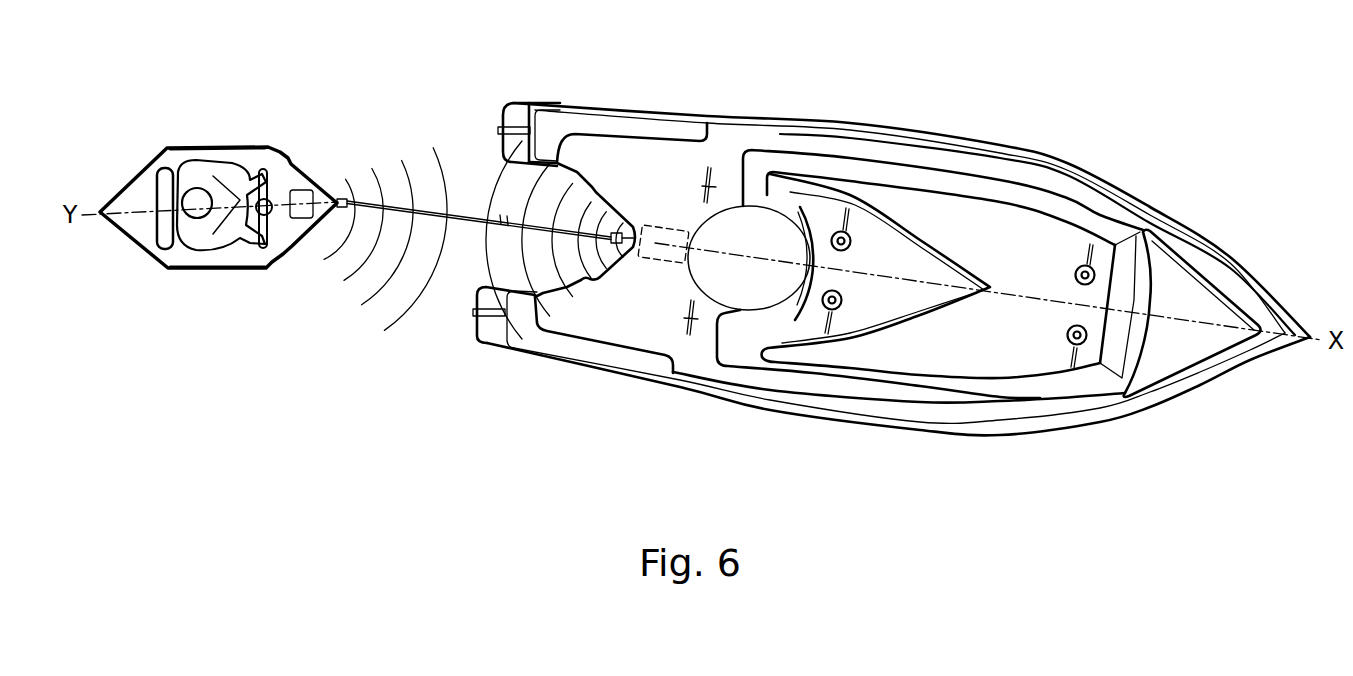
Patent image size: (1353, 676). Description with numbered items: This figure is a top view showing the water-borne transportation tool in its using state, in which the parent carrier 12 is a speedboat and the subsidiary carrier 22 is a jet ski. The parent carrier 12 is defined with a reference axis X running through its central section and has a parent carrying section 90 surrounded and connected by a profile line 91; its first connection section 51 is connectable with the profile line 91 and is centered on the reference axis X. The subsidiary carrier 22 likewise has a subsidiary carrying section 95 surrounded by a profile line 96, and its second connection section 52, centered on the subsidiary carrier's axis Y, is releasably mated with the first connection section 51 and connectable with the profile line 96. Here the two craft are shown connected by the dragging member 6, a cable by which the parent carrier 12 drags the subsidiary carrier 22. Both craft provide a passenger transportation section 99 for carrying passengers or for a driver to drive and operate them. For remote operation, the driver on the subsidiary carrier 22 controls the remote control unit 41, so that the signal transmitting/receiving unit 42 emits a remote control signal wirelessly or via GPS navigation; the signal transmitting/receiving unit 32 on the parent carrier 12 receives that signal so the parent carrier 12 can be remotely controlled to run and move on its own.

The dragging member 6 is at (431, 197).
The parent carrier 12 is at (1193, 240).
The subsidiary carrier 22 is at (142, 188).
The signal transmitting/receiving unit 32 is at (663, 226).
The remote control unit 41 is at (276, 190).
The signal transmitting/receiving unit 42 is at (290, 190).
The first connection section 51 is at (588, 282).
The second connection section 52 is at (326, 172).
The parent carrying section 90 is at (630, 138).
The profile line 91 is at (488, 345).
The subsidiary carrying section 95 is at (207, 146).
The profile line 96 is at (270, 272).
The passenger transportation section 99 is at (205, 255).